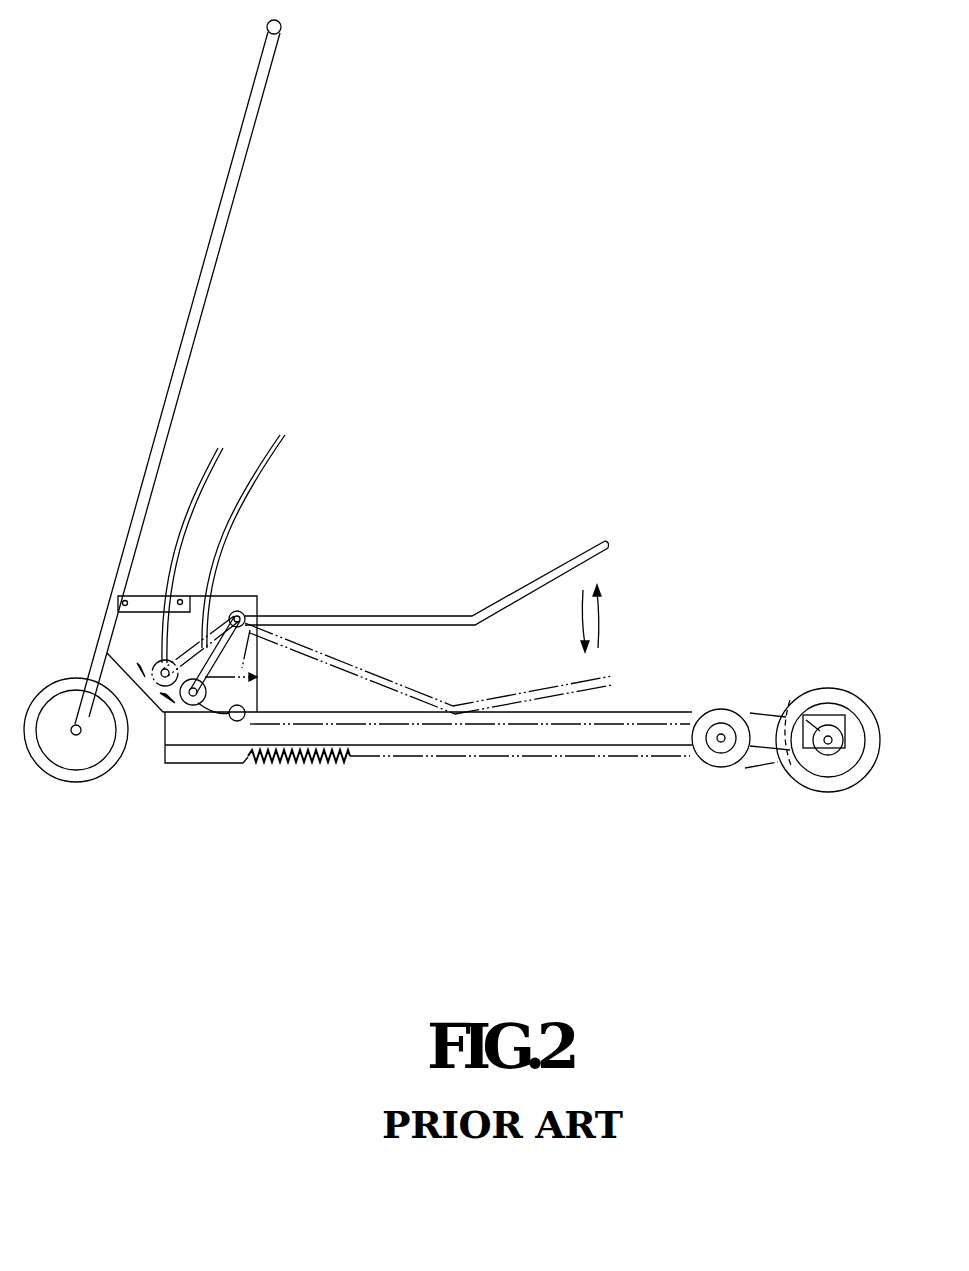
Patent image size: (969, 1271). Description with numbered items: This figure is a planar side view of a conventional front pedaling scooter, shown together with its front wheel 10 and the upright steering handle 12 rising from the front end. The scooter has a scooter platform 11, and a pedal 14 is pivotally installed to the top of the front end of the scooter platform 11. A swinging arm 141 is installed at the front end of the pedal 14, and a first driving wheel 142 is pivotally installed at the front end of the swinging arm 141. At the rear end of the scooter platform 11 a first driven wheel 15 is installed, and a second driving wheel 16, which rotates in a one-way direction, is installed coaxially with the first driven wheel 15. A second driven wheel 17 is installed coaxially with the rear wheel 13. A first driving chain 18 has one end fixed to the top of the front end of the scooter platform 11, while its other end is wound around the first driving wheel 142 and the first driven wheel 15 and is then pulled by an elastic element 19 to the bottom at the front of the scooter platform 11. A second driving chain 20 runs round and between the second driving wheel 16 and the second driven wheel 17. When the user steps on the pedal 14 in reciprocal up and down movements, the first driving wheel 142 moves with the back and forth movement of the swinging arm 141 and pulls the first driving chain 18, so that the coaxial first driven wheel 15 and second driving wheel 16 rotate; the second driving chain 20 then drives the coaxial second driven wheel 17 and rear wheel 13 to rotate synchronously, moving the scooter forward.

The front wheel 10 is at (76, 730).
The scooter platform 11 is at (238, 733).
The steering handle 12 is at (178, 372).
The rear wheel 13 is at (830, 690).
The pedal 14 is at (430, 616).
The swinging arm 141 is at (280, 435).
The first driving wheel 142 is at (218, 448).
The first driven wheel 15 is at (722, 726).
The second driving wheel 16 is at (735, 725).
The second driven wheel 17 is at (823, 748).
The first driving chain 18 is at (244, 613).
The elastic element 19 is at (310, 762).
The second driving chain 20 is at (760, 763).